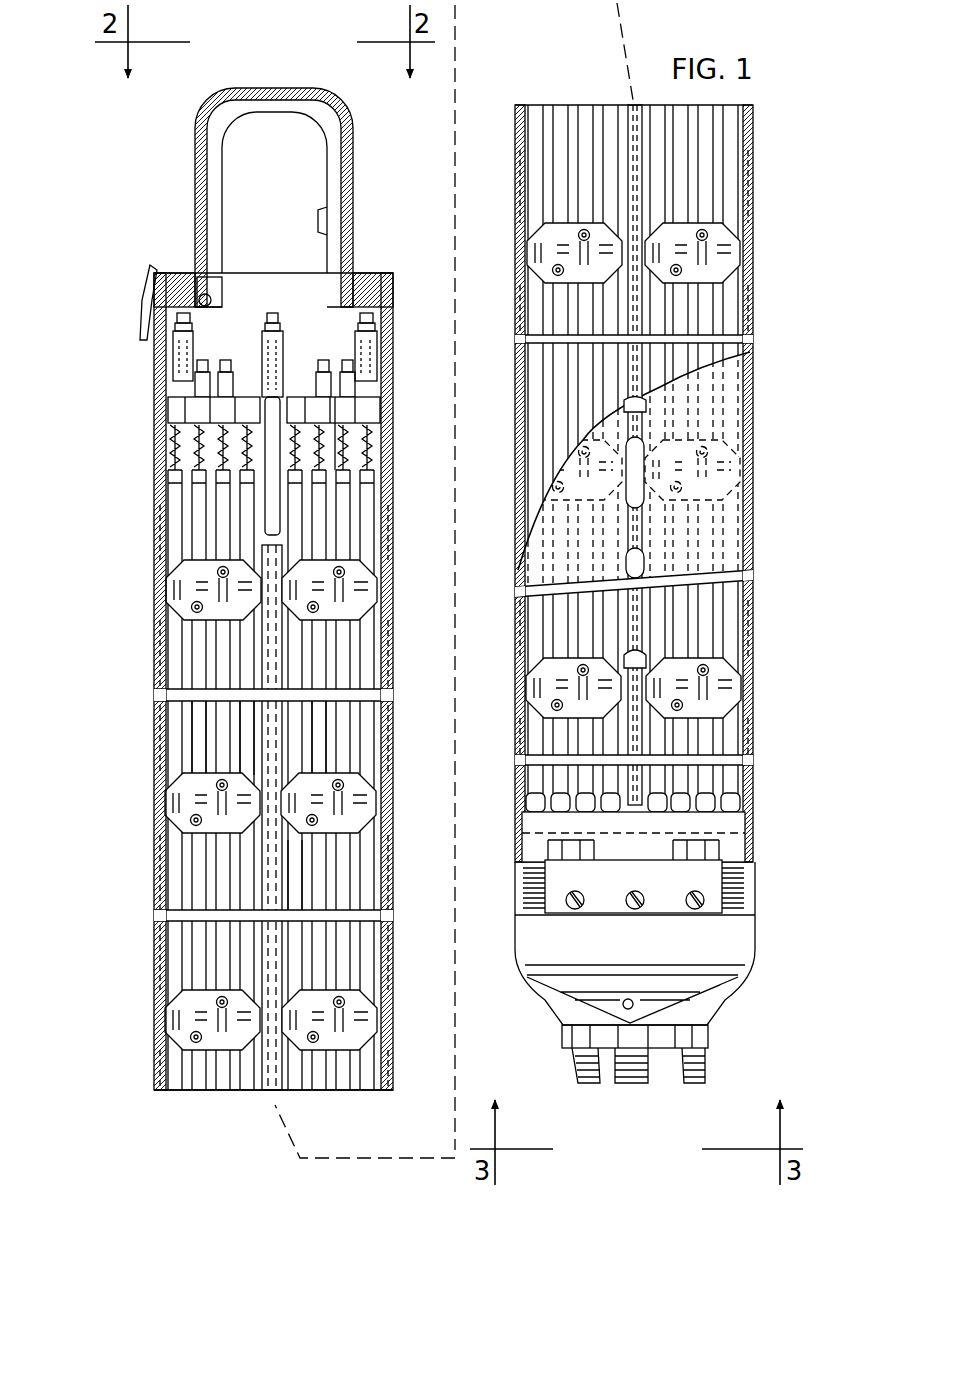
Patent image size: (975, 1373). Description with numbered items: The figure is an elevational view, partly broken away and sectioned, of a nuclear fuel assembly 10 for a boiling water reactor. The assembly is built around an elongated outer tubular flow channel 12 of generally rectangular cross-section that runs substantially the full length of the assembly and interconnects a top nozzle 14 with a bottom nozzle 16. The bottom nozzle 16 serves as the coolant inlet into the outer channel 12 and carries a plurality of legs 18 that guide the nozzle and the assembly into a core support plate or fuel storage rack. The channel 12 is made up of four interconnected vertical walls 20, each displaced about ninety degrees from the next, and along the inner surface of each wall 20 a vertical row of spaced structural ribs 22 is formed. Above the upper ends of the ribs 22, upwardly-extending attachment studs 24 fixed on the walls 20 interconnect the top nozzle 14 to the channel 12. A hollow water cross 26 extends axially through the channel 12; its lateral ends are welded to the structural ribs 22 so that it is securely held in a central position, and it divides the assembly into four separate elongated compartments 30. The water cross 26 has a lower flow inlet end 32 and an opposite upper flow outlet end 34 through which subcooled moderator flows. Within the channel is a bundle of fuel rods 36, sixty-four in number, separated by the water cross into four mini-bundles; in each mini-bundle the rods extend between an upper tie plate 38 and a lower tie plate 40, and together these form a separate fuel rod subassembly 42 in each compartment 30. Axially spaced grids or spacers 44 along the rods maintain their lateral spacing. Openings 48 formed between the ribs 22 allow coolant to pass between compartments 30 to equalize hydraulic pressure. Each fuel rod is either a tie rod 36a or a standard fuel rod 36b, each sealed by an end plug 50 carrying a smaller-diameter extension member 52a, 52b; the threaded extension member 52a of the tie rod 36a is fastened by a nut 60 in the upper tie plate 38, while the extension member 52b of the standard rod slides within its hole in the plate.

The nuclear fuel assembly 10 is at (158, 220).
The outer tubular flow channel 12 is at (156, 612).
The top nozzle 14 is at (392, 312).
The bottom nozzle 16 is at (750, 985).
The legs 18 is at (700, 1085).
The vertical walls 20 is at (162, 498).
The structural ribs 22 is at (163, 545).
The attachment studs 24 is at (283, 330).
The hollow water cross 26 is at (262, 882).
The compartments 30 is at (178, 1094).
The lower flow inlet end 32 is at (674, 865).
The upper flow outlet end 34 is at (280, 555).
The fuel rods 36 is at (563, 408).
The tie rod 36a is at (225, 740).
The standard fuel rod 36b is at (250, 760).
The upper tie plate 38 is at (378, 413).
The lower tie plate 40 is at (738, 815).
The fuel rod subassembly 42 is at (335, 418).
The grids or spacers 44 is at (185, 610).
The openings 48 is at (162, 592).
The end plug 50 is at (175, 481).
The extension member of tie rod 52a is at (238, 457).
The extension member of standard fuel rod 52b is at (238, 440).
The nut 60 is at (228, 380).